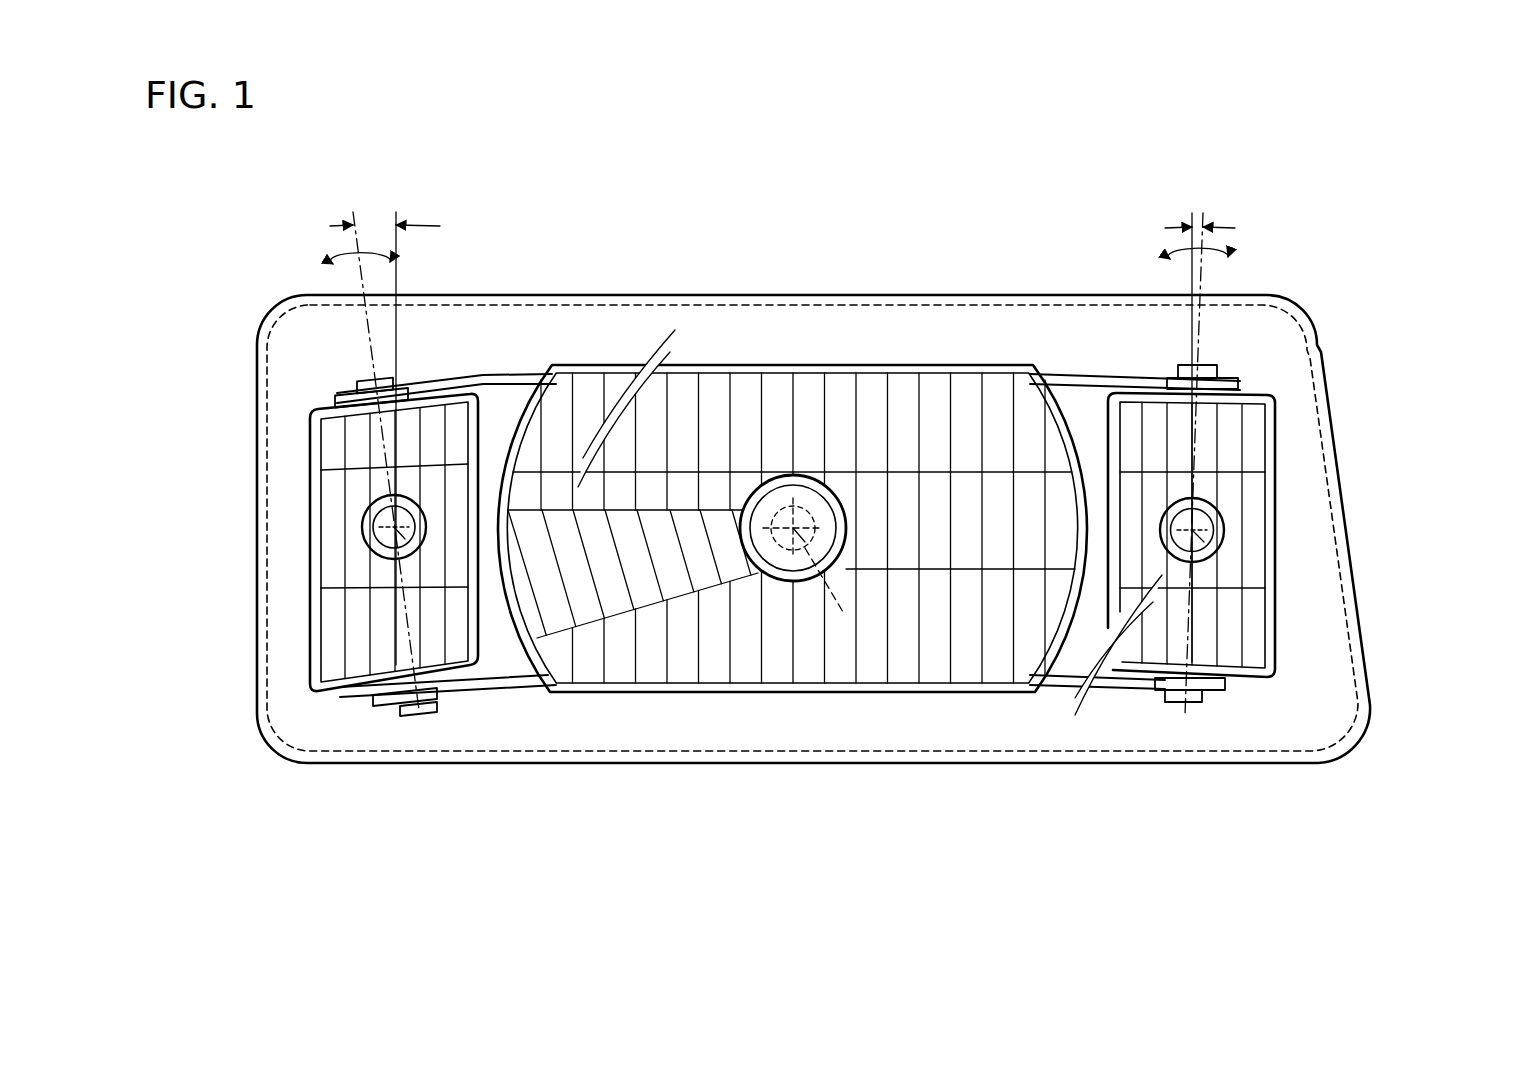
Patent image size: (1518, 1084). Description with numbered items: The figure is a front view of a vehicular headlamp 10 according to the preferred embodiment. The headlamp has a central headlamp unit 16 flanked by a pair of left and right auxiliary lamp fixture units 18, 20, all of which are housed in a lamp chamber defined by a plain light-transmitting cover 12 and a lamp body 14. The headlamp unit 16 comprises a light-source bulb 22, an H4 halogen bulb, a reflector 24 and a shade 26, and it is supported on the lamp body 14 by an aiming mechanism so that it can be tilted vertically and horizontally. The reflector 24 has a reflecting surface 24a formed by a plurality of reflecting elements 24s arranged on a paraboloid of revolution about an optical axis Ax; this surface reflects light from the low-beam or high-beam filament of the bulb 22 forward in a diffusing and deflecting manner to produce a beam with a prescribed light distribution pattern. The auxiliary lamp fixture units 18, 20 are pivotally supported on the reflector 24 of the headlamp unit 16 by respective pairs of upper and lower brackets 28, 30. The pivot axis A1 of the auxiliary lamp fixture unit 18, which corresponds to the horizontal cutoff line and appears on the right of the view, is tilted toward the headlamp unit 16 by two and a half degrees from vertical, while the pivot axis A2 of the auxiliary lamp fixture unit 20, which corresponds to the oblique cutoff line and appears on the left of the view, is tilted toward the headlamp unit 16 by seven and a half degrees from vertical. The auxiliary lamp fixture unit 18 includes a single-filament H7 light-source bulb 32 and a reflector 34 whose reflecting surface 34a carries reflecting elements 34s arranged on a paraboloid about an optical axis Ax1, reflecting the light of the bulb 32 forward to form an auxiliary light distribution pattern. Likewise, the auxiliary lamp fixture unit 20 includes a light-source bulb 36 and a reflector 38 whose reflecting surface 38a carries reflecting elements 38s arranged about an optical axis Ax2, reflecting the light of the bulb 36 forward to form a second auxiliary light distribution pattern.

The vehicular headlamp 10 is at (1108, 158).
The plain light-transmitting cover 12 is at (975, 325).
The lamp body 14 is at (780, 293).
The headlamp unit 16 is at (857, 338).
The auxiliary lamp fixture unit 18 is at (1284, 385).
The auxiliary lamp fixture unit 20 is at (297, 392).
The light-source bulb 22 is at (818, 510).
The reflector 24 is at (866, 697).
The reflecting surface 24a is at (958, 405).
The reflecting elements 24s is at (645, 592).
The shade 26 is at (846, 536).
The upper bracket 28 is at (1095, 378).
The lower bracket 30 is at (490, 370).
The light-source bulb 32 is at (1208, 520).
The reflector 34 is at (1241, 684).
The reflecting surface 34a is at (1225, 458).
The reflecting elements 34s is at (1225, 605).
The light-source bulb 36 is at (375, 517).
The reflector 38 is at (351, 700).
The reflecting surface 38a is at (358, 455).
The reflecting elements 38s is at (358, 625).
The optical axis Ax is at (832, 594).
The optical axis Ax1 is at (1222, 550).
The optical axis Ax2 is at (365, 550).
The pivot axis A1 is at (1205, 280).
The pivot axis A2 is at (360, 280).